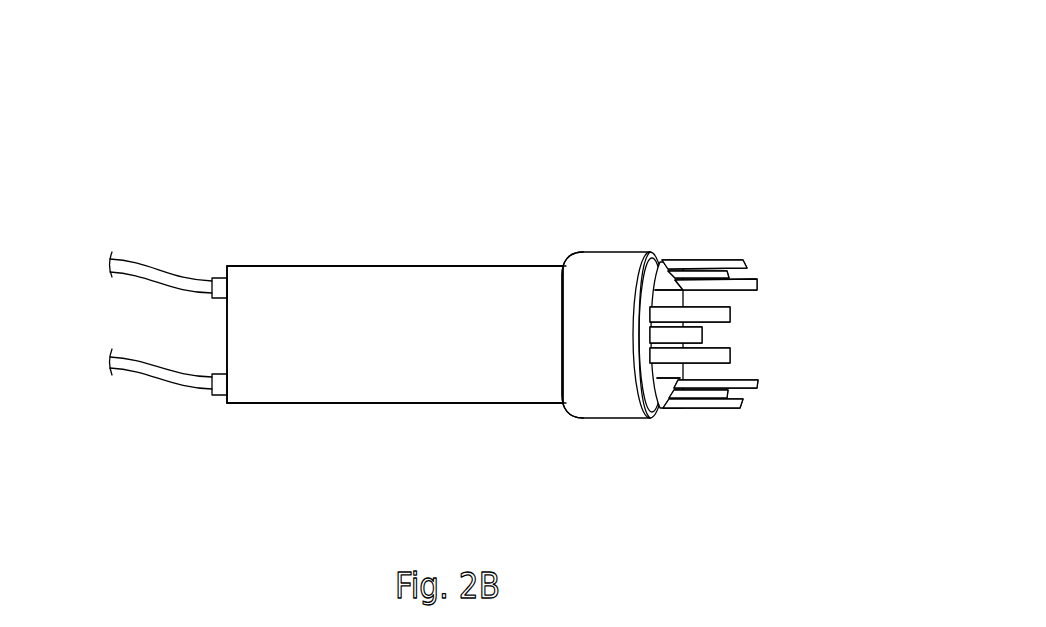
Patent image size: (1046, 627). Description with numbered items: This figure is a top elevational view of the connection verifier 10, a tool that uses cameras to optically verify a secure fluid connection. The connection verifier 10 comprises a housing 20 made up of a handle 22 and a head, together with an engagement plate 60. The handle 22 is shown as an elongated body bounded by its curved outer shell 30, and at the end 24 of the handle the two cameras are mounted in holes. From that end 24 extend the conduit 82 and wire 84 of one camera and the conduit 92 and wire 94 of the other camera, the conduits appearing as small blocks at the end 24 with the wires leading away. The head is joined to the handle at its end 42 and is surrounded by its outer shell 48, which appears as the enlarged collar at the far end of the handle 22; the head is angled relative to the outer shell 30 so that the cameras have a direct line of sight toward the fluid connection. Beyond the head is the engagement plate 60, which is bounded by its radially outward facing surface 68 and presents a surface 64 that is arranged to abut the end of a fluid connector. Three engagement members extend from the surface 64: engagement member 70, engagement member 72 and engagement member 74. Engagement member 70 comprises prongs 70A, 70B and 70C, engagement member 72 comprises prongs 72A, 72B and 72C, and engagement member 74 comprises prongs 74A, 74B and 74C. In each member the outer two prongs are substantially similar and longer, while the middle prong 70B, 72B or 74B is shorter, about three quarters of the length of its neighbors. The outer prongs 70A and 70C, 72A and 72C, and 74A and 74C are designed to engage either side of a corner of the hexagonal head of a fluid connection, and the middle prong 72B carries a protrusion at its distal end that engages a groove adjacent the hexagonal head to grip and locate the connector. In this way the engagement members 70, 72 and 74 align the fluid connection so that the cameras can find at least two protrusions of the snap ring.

The connection verifier 10 is at (190, 83).
The housing 20 is at (275, 266).
The handle 22 is at (325, 389).
The end 24 is at (227, 320).
The outer shell 30 is at (348, 266).
The end 42 is at (561, 303).
The outer shell 48 is at (592, 268).
The engagement plate 60 is at (664, 283).
The surface 64 is at (677, 283).
The radially outward facing surface 68 is at (663, 414).
The engagement member 70 is at (799, 210).
The prong 70A is at (759, 284).
The prong 70B is at (750, 270).
The prong 70C is at (727, 259).
The engagement member 72 is at (821, 331).
The prong 72A is at (730, 313).
The prong 72B is at (702, 335).
The prong 72C is at (730, 355).
The engagement member 74 is at (826, 406).
The prong 74A is at (746, 408).
The prong 74B is at (738, 396).
The prong 74C is at (758, 384).
The conduit 82 is at (220, 391).
The wire 84 is at (118, 368).
The conduit 92 is at (220, 278).
The wire 94 is at (128, 264).